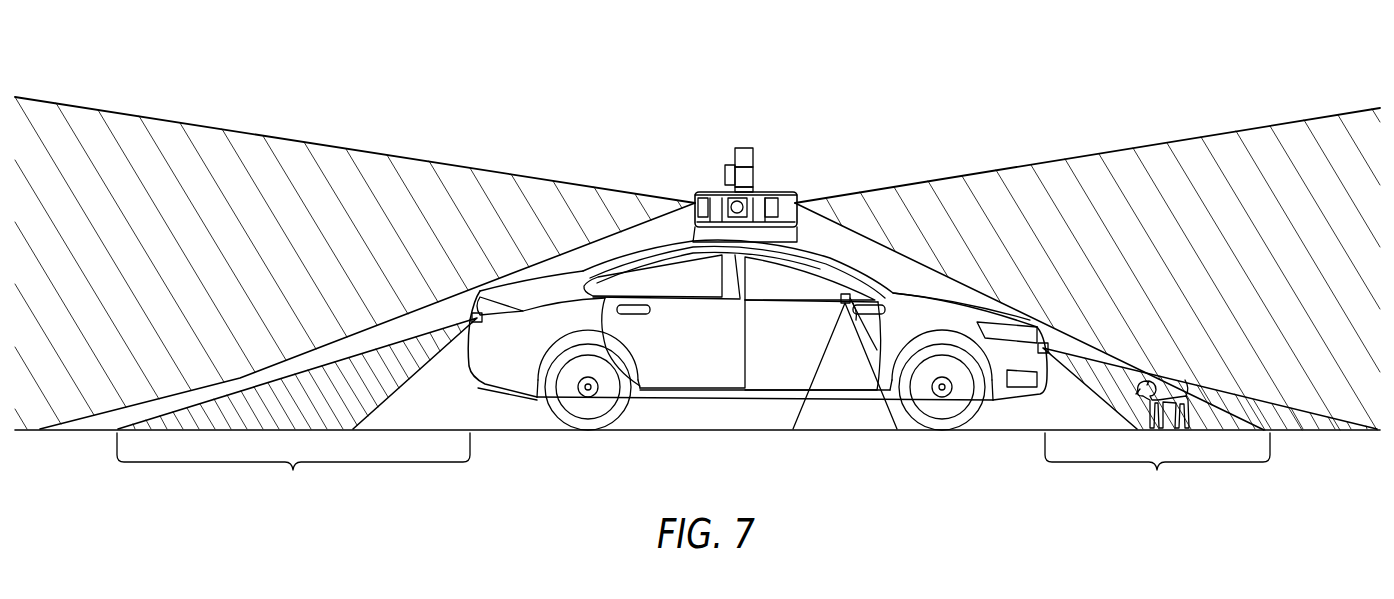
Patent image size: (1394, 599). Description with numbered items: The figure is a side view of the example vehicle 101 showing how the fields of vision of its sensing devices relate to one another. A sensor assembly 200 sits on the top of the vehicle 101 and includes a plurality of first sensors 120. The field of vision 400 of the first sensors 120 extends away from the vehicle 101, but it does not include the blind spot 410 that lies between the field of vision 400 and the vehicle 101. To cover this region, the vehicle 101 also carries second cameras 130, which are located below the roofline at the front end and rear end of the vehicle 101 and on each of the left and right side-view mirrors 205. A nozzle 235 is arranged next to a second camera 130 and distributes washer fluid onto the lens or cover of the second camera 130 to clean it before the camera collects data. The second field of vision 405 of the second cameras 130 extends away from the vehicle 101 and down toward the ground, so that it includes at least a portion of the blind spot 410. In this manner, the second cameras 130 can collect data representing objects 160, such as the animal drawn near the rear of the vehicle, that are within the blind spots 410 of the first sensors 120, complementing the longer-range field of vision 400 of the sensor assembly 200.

The vehicle 101 is at (648, 236).
The first sensors 120 is at (693, 199).
The sensor assembly 200 is at (775, 186).
The second cameras 130 is at (476, 314).
The side-view mirrors 205 is at (847, 293).
The nozzle 235 is at (853, 299).
The objects 160 is at (1166, 396).
The field of vision 400 is at (357, 176).
The second field of vision 405 is at (352, 368).
The blind spot 410 is at (836, 368).